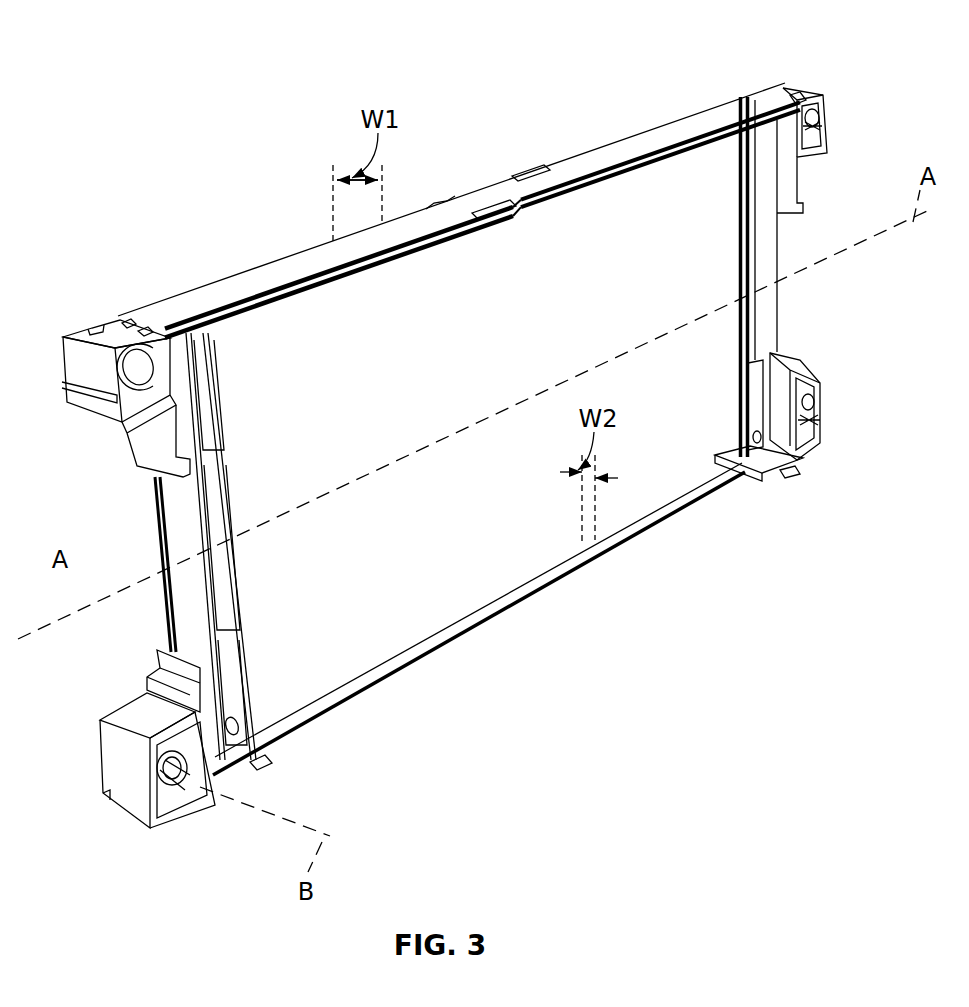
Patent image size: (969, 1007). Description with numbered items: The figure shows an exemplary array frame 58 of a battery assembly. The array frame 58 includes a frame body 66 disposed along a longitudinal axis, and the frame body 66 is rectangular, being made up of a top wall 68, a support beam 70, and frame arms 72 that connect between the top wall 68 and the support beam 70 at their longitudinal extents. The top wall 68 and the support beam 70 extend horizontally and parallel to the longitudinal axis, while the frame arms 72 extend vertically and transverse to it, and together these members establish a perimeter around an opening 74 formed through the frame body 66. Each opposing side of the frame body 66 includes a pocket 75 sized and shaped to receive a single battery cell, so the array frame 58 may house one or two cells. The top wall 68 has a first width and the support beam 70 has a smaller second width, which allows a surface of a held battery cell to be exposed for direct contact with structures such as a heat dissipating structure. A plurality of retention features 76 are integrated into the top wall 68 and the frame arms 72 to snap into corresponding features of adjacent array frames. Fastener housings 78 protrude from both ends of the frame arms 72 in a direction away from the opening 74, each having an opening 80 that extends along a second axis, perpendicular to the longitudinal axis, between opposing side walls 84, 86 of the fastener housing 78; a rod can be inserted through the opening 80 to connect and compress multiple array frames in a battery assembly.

The array frame 58 is at (645, 108).
The frame body 66 is at (820, 166).
The top wall 68 is at (402, 225).
The support beam 70 is at (520, 598).
The frame arms 72 is at (763, 262).
The opening 74 is at (480, 430).
The pocket 75 is at (730, 438).
The retention features 76 is at (128, 318).
The fastener housings 78 is at (825, 125).
The opening 80 is at (824, 140).
The side wall 84 is at (150, 748).
The side wall 86 is at (108, 712).